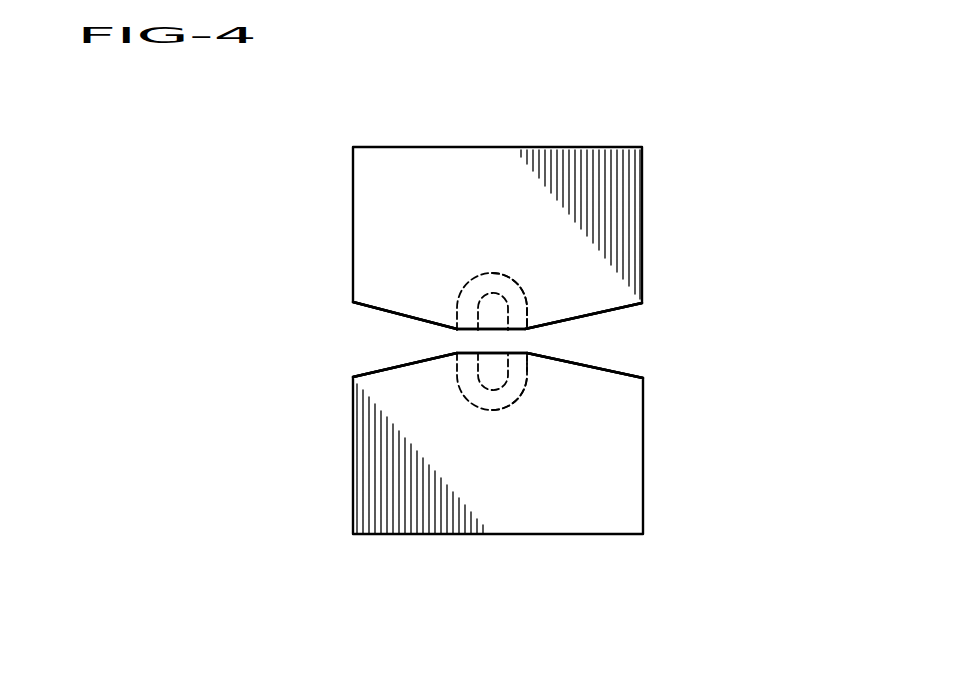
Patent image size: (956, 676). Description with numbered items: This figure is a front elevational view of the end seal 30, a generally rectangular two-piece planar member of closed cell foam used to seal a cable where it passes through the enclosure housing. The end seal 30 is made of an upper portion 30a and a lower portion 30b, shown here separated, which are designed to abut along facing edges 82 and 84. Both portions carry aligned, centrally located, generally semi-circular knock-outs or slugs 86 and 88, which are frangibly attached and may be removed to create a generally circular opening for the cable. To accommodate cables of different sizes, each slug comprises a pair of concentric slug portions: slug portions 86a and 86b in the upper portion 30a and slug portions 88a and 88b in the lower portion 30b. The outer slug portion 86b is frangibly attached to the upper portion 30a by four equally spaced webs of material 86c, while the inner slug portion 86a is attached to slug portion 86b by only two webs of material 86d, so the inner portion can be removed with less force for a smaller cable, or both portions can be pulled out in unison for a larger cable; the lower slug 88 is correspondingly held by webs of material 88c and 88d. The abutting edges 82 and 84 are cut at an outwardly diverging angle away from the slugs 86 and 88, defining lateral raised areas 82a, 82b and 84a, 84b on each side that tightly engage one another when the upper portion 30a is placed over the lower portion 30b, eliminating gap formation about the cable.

The end seal 30 is at (767, 80).
The upper portion 30a is at (377, 163).
The lower portion 30b is at (373, 485).
The abutting edge 82 is at (370, 303).
The lateral raised area 82a is at (393, 313).
The lateral raised area 82b is at (600, 313).
The abutting edge 84 is at (385, 371).
The lateral raised area 84a is at (405, 365).
The lateral raised area 84b is at (592, 366).
The slug 86 is at (493, 307).
The slug portion 86a is at (502, 293).
The slug portion 86b is at (517, 293).
The webs of material 86c is at (528, 300).
The webs of material 86d is at (483, 297).
The slug 88 is at (490, 403).
The slug portion 88a is at (502, 393).
The slug portion 88b is at (527, 390).
The webs of material 88c is at (500, 367).
The webs of material 88d is at (483, 393).